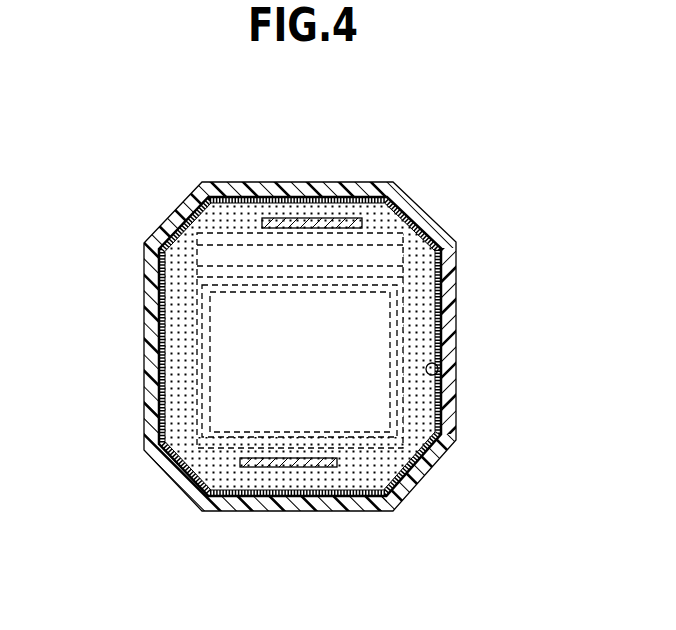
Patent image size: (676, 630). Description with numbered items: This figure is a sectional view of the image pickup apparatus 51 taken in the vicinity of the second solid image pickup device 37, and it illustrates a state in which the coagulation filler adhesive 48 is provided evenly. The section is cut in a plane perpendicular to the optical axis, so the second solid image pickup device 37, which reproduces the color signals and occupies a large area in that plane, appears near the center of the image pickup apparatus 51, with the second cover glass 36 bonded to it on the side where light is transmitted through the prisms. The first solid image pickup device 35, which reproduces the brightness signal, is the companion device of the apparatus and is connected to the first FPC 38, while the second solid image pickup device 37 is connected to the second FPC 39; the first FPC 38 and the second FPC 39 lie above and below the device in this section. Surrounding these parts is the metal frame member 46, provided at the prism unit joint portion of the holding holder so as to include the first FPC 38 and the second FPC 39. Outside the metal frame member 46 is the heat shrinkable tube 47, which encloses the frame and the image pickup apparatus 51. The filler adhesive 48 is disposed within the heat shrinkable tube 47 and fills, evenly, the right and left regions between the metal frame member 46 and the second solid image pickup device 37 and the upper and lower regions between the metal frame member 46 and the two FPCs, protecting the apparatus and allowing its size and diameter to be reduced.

The image pickup apparatus 51 is at (310, 175).
The first FPC 38 is at (353, 220).
The second FPC 39 is at (276, 466).
The first solid image pickup device 35 is at (408, 210).
The heat shrinkable tube 47 is at (446, 260).
The second solid image pickup device 37 is at (431, 463).
The filler adhesive 48 is at (163, 277).
The metal frame member 46 is at (440, 370).
The second cover glass 36 is at (447, 408).